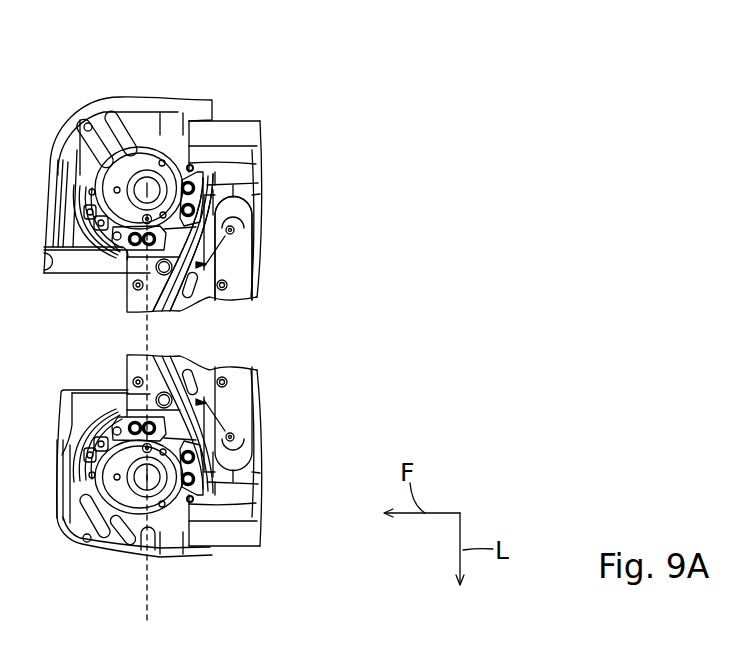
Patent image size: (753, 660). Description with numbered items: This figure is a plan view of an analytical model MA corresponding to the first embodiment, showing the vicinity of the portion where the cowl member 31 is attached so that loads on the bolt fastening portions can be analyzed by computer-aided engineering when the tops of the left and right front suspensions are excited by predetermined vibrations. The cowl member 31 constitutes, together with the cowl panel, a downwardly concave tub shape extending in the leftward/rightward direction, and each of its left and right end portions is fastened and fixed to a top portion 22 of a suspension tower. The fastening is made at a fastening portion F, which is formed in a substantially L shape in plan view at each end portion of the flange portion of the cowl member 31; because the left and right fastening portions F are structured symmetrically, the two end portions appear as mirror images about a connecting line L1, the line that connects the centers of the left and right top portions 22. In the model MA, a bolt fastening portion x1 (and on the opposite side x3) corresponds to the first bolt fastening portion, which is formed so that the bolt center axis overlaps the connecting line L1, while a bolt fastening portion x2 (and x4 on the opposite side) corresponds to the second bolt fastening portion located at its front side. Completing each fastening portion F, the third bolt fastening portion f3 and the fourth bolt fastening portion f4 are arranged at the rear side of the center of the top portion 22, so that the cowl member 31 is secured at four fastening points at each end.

The top portion 22 is at (142, 145).
The model MA is at (302, 96).
The fourth bolt fastening portion f4 is at (200, 173).
The third bolt fastening portion f3 is at (196, 210).
The fastening portion F is at (235, 231).
The cowl member 31 is at (205, 265).
The bolt fastening portion x2 is at (133, 245).
The bolt fastening portion x1 is at (146, 248).
The bolt fastening portion x4 is at (134, 424).
The bolt fastening portion x3 is at (147, 424).
The connecting line L1 is at (150, 602).